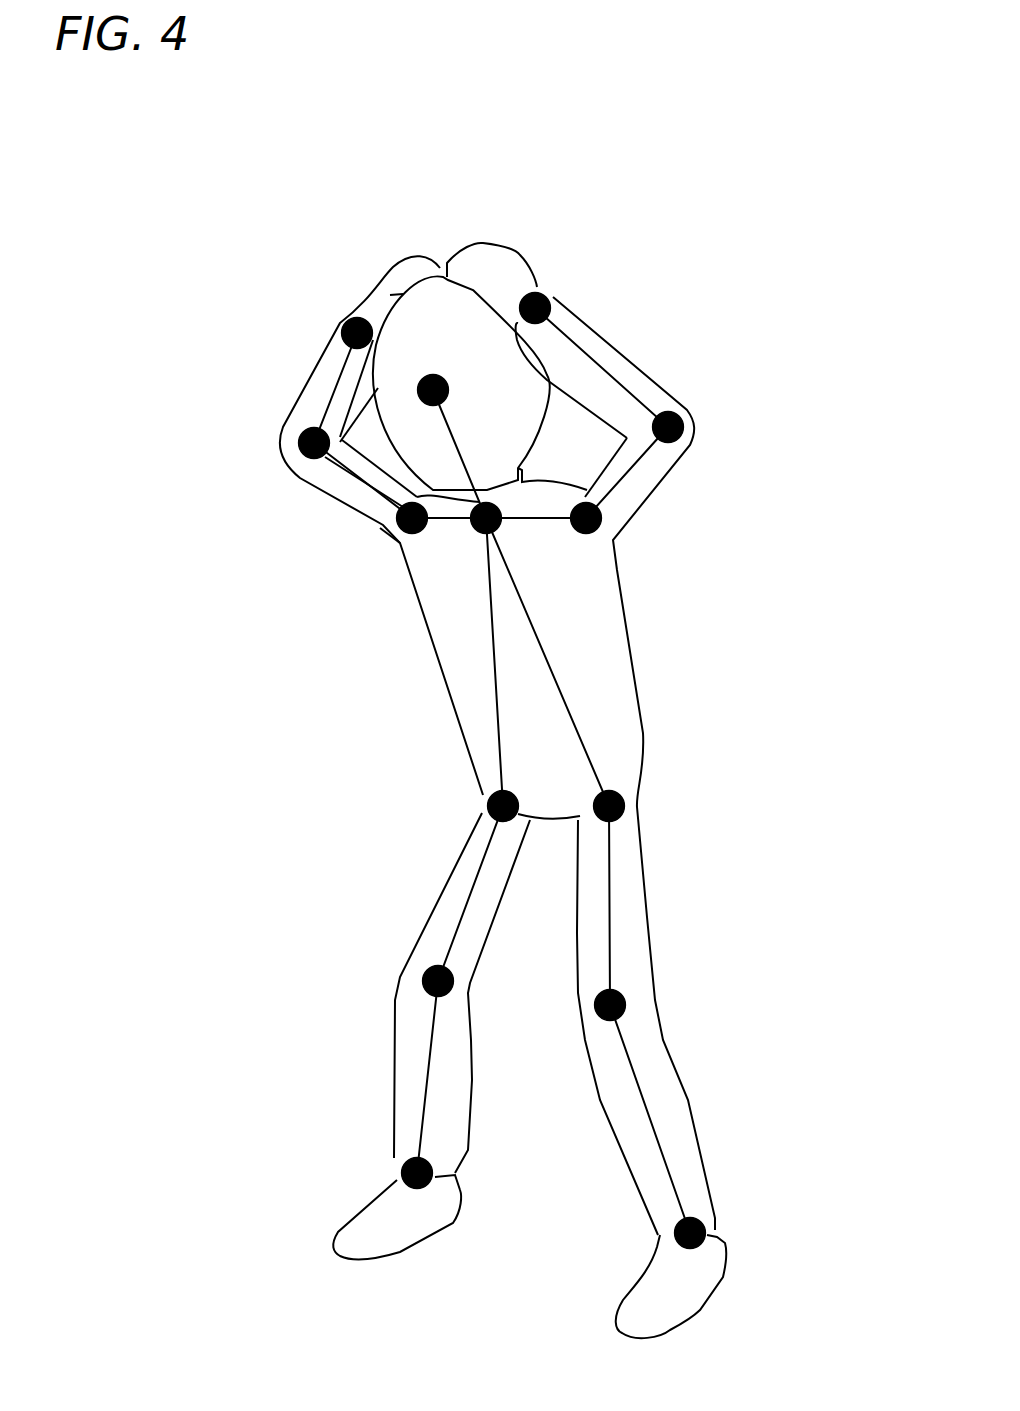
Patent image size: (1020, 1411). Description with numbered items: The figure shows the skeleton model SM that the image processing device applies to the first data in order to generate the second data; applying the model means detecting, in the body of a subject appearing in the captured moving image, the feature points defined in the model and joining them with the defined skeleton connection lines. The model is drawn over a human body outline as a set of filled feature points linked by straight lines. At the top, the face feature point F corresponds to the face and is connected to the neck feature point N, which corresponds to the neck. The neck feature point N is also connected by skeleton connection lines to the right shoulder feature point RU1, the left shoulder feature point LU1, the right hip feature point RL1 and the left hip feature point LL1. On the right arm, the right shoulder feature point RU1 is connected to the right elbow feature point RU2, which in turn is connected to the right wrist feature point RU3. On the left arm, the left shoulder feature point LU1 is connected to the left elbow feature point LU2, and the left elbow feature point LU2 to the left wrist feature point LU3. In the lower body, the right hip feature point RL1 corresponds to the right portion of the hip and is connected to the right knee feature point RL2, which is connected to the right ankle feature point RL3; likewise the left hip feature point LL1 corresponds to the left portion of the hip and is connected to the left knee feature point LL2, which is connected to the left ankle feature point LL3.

The skeleton model SM is at (725, 338).
The face feature point F is at (433, 390).
The neck feature point N is at (473, 533).
The right shoulder feature point RU1 is at (398, 523).
The right elbow feature point RU2 is at (300, 447).
The right wrist feature point RU3 is at (340, 323).
The left shoulder feature point LU1 is at (600, 520).
The left elbow feature point LU2 is at (685, 420).
The left wrist feature point LU3 is at (553, 295).
The right hip feature point RL1 is at (487, 807).
The right knee feature point RL2 is at (427, 983).
The right ankle feature point RL3 is at (405, 1168).
The left hip feature point LL1 is at (625, 820).
The left knee feature point LL2 is at (590, 1012).
The left ankle feature point LL3 is at (707, 1233).